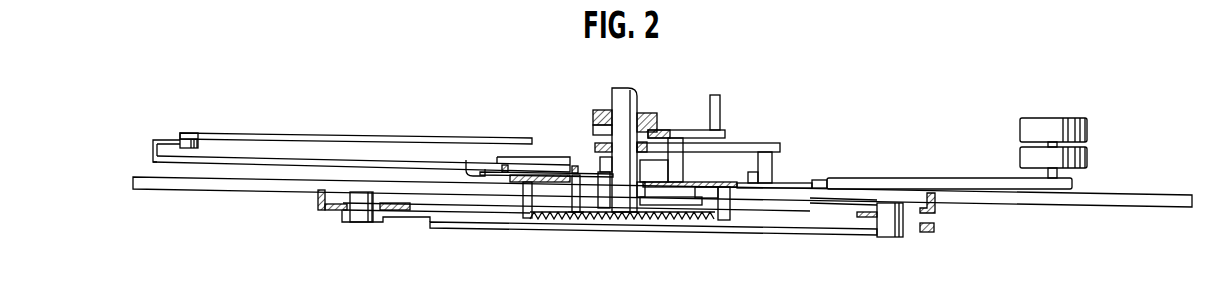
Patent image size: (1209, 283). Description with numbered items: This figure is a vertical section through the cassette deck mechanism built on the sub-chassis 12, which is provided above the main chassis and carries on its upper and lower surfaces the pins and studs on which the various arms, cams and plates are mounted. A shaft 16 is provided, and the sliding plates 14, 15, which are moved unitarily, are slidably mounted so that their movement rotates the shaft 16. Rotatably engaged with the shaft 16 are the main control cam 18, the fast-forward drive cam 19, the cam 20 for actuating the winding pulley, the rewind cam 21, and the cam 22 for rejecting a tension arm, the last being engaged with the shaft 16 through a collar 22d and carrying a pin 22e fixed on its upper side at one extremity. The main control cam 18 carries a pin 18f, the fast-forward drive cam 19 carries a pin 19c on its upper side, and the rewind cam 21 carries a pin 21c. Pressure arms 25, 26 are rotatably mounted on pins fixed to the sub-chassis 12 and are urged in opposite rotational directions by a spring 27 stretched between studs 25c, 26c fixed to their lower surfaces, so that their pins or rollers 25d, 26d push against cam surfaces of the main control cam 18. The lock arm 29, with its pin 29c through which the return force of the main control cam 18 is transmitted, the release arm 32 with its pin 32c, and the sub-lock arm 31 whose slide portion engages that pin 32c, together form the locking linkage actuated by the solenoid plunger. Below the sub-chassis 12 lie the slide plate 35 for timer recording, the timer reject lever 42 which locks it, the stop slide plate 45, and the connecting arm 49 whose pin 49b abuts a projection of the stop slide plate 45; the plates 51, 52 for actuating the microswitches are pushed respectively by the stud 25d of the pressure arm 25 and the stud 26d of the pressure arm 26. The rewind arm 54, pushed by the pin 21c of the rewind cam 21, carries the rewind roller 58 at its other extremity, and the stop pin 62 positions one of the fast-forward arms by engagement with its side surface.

The sub-chassis 12 is at (1138, 195).
The sliding plate 14 is at (643, 182).
The sliding plate 15 is at (643, 112).
The shaft 16 is at (620, 88).
The main control cam 18 is at (600, 175).
The pin of main control cam 18f is at (576, 212).
The fast-forward drive cam 19 is at (662, 182).
The pin 19c is at (668, 152).
The cam for actuating the winding pulley 20 is at (600, 157).
The rewind cam 21 is at (748, 143).
The pin of rewind cam 21c is at (773, 166).
The cam for rejecting a tension arm 22 is at (697, 130).
The collar 22d is at (592, 112).
The pin 22e is at (720, 103).
The pressure arm 25 is at (733, 180).
The stud 25c is at (725, 220).
The pin (roller) / stud 25d is at (700, 187).
The pressure arm 26 is at (515, 182).
The stud 26c is at (527, 218).
The pin (roller) / stud 26d is at (552, 172).
The spring 27 is at (628, 220).
The lock arm 29 is at (300, 165).
The pin of lock arm 29c is at (466, 165).
The sub-lock arm 31 is at (153, 138).
The release arm 32 is at (413, 133).
The pin 32c is at (187, 134).
The slide plate 35 is at (937, 212).
The timer reject lever 42 is at (927, 233).
The stop slide plate 45 is at (322, 210).
The connecting arm 49 is at (417, 200).
The pin 49b is at (400, 210).
The plate 51 is at (830, 229).
The plate 52 is at (430, 217).
The rewind arm 54 is at (912, 178).
The rewind roller 58 is at (1037, 120).
The stop pin 62 is at (820, 180).